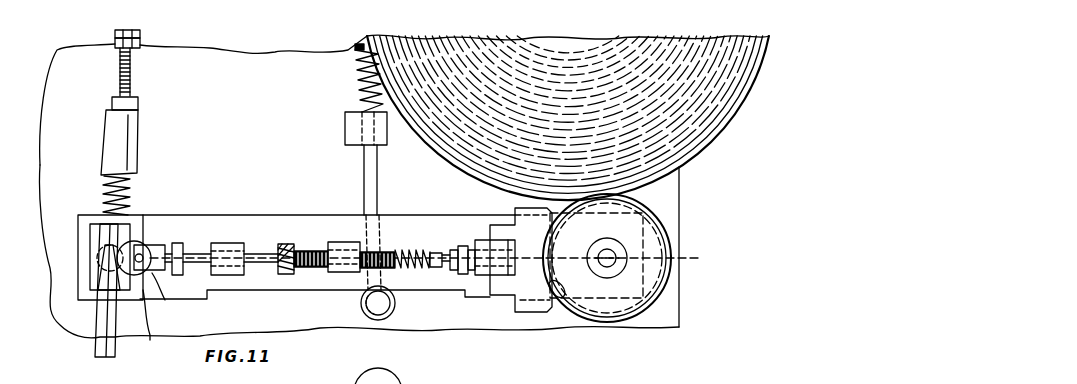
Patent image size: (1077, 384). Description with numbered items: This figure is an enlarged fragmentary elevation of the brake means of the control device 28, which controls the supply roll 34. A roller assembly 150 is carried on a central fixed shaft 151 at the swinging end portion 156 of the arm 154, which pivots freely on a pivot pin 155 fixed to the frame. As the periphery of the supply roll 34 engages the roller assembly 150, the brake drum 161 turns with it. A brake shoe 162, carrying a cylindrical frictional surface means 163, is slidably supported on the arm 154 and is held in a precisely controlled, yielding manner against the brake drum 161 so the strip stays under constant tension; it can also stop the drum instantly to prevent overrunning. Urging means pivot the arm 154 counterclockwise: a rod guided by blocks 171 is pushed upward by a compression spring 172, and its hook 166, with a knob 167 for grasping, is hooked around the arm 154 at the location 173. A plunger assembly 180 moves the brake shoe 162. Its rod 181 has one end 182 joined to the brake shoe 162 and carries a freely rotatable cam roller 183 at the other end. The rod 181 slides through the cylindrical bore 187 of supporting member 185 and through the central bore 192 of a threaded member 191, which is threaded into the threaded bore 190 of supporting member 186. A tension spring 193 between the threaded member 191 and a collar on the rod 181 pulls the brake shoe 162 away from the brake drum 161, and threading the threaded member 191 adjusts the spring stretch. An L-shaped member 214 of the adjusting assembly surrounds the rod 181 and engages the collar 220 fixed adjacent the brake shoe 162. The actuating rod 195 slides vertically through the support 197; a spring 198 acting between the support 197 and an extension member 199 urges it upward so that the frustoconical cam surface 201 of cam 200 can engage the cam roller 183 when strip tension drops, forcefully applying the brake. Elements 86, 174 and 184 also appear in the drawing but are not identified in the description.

The control device 28 is at (268, 34).
The supply roll 34 is at (748, 96).
The drum grooved surface 86 is at (603, 52).
The roller assembly 150 is at (672, 258).
The central fixed shaft 151 is at (612, 255).
The arm 154 is at (218, 215).
The pivot pin 155 is at (97, 258).
The swinging end portion 156 is at (490, 206).
The brake drum 161 is at (668, 279).
The brake shoe 162 is at (522, 320).
The cylindrical frictional surface means 163 is at (562, 300).
The hook 166 is at (352, 322).
The knob 167 is at (390, 316).
The block 171 is at (345, 128).
The compression spring 172 is at (355, 76).
The hook engagement location 173 is at (365, 302).
The rod 174 is at (442, 270).
The plunger assembly 180 is at (338, 232).
The rod 181 is at (279, 247).
The end of rod 182 is at (492, 252).
The cam roller 183 is at (165, 300).
The roller 184 is at (365, 376).
The supporting member 185 is at (228, 275).
The supporting member 186 is at (366, 242).
The cylindrical bore 187 is at (232, 243).
The threaded bore 190 is at (332, 274).
The threaded member 191 is at (380, 250).
The central bore 192 is at (282, 276).
The tension spring 193 is at (412, 248).
The rod 195 is at (118, 30).
The support 197 is at (78, 222).
The spring 198 is at (130, 197).
The extension member 199 is at (147, 100).
The cam 200 is at (93, 275).
The cam surface 201 is at (150, 340).
The L-shaped member 214 is at (452, 250).
The collar 220 is at (472, 297).